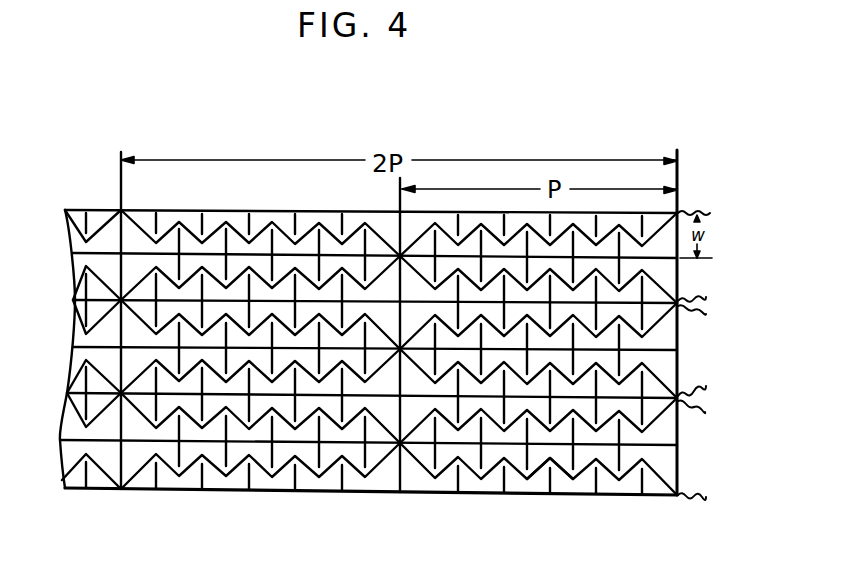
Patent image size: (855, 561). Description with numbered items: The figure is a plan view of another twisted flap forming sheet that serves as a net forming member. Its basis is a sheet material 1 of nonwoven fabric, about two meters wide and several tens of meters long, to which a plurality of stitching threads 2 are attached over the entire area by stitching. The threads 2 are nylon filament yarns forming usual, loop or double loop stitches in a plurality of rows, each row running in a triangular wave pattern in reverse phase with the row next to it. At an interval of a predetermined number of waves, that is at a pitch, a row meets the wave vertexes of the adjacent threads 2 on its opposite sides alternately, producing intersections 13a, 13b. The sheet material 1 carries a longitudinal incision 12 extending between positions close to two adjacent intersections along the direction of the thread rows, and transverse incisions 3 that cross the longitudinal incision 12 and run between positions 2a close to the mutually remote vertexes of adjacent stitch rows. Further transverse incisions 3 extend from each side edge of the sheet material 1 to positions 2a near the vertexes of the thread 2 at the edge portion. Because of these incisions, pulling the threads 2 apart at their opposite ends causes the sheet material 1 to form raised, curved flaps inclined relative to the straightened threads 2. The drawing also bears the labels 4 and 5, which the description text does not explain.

The net body 1 is at (680, 325).
The zigzag strand 2 is at (686, 496).
The bent portion of strand 2a is at (548, 461).
The connecting member 3 is at (551, 482).
The net 4 is at (636, 497).
The edge portion 5 is at (73, 334).
The longitudinal member 12 is at (657, 444).
The crossing point 13a is at (400, 444).
The crossing point 13b is at (681, 397).